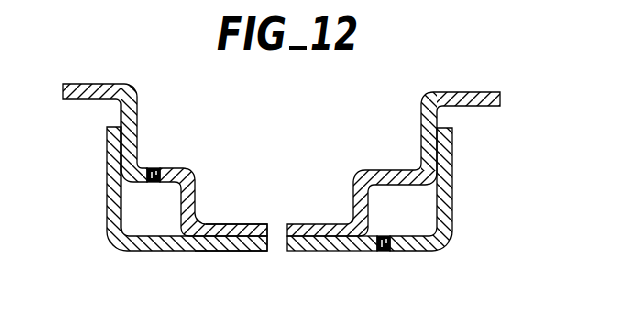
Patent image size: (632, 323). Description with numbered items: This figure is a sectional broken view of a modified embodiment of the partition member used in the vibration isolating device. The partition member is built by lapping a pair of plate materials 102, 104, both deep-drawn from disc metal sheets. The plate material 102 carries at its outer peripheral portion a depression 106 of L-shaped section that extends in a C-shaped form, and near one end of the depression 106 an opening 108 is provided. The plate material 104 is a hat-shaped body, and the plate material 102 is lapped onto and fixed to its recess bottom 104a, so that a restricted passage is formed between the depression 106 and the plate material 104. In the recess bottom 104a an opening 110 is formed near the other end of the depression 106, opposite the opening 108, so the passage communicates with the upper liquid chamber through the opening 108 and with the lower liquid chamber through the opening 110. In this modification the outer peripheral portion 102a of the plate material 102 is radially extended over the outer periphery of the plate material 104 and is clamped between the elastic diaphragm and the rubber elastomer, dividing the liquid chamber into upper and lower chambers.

The plate material 102 is at (138, 104).
The outer peripheral portion 102a is at (487, 92).
The plate material 104 is at (107, 157).
The recess bottom 104a is at (248, 252).
The depression 106 is at (371, 172).
The opening 108 is at (160, 168).
The opening 110 is at (392, 255).